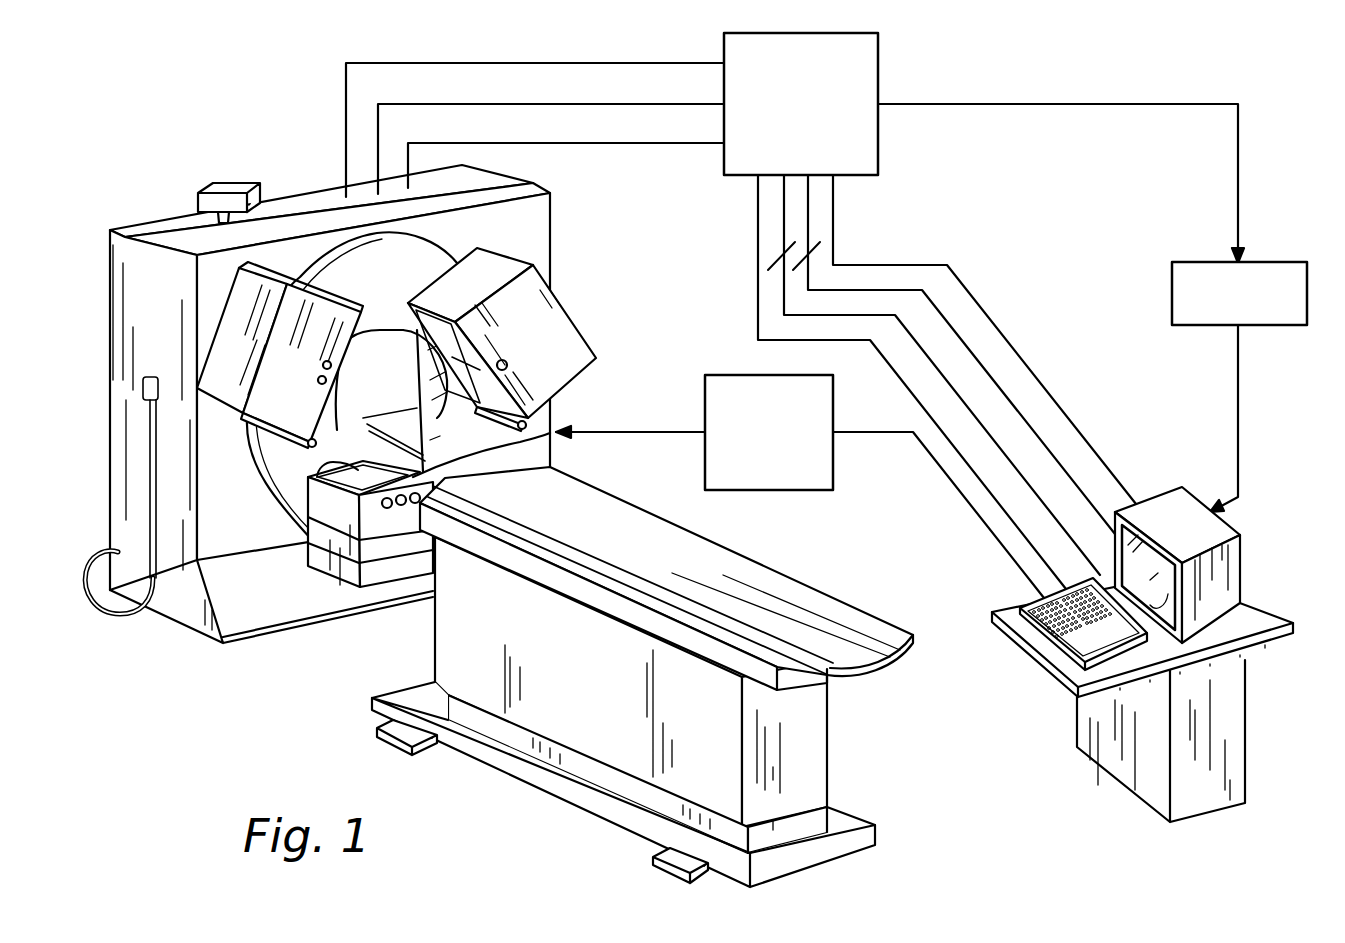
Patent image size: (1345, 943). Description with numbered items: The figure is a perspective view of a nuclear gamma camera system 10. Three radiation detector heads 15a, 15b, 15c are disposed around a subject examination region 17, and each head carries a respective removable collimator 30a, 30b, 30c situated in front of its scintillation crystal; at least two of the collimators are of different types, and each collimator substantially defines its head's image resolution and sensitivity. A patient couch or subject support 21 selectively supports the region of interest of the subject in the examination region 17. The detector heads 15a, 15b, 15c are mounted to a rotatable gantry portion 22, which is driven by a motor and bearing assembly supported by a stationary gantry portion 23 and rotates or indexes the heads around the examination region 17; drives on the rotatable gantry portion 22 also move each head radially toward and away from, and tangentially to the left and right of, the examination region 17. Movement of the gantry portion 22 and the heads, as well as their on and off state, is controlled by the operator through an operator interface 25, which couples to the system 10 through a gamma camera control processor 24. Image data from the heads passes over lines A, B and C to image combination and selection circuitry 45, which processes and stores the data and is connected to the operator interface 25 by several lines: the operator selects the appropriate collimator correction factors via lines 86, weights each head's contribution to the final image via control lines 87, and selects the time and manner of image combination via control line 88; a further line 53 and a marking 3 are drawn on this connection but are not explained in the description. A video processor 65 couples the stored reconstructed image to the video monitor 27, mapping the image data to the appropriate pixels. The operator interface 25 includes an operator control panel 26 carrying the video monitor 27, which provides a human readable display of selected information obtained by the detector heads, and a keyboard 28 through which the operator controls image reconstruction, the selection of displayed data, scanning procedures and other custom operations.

The gamma camera system 10 is at (150, 140).
The stationary gantry portion 23 is at (318, 195).
The radiation detector head 15a is at (577, 332).
The radiation detector head 15b is at (242, 323).
The radiation detector head 15c is at (388, 577).
The collimator 30a is at (414, 320).
The collimator 30b is at (363, 323).
The collimator 30c is at (322, 470).
The subject examination region 17 is at (349, 428).
The subject support 21 is at (808, 585).
The rotatable gantry portion 22 is at (563, 440).
The gamma camera control processor 24 is at (833, 468).
The image combination and selection circuitry 45 is at (879, 81).
The image output line 53 is at (757, 203).
The collimator correction factor selection lines 86 is at (783, 227).
The control lines 87 is at (809, 195).
The control line 88 is at (834, 235).
The three-line bus indicator 3 is at (791, 269).
The video processor 65 is at (1203, 262).
The operator interface 25 is at (1203, 532).
The operator control panel 26 is at (1243, 557).
The video monitor 27 is at (1210, 568).
The keyboard 28 is at (1037, 602).